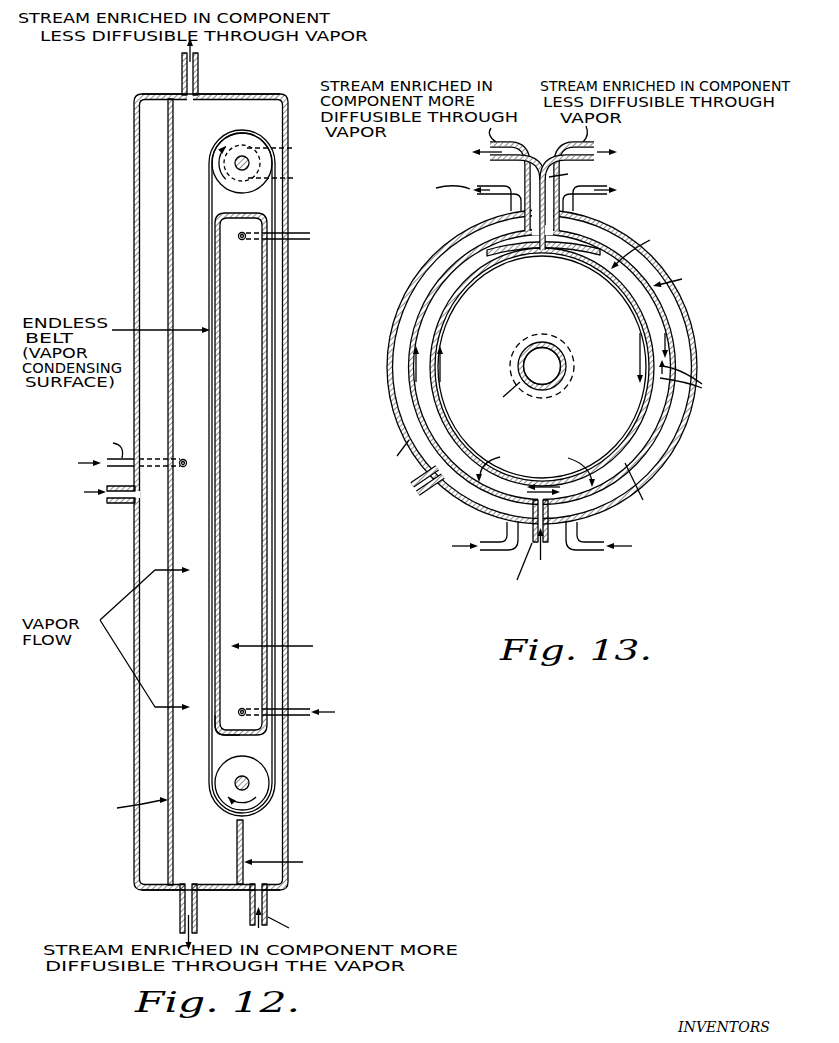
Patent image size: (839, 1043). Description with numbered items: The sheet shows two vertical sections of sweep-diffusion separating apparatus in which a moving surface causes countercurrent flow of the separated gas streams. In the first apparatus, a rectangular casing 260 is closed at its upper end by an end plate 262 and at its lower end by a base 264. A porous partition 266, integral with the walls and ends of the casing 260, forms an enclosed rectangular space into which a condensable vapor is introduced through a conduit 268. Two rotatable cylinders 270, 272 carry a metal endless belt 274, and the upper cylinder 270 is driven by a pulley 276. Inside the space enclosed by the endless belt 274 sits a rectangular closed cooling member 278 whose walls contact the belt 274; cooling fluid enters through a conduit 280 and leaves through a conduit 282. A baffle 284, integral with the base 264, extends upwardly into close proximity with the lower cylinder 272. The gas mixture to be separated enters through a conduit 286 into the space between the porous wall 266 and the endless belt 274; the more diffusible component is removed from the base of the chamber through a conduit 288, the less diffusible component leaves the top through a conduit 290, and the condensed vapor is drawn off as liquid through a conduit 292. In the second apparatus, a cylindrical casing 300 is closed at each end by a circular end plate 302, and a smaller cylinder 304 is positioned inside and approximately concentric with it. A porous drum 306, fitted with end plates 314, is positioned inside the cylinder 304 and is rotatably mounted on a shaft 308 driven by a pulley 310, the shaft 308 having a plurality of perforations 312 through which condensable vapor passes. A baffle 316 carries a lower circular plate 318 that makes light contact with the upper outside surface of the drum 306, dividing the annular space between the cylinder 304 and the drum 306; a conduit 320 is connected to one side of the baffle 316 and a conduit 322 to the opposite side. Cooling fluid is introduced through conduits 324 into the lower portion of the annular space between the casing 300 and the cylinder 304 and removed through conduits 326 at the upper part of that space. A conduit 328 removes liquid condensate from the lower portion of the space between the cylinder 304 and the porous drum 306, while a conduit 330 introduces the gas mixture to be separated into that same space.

In FIG. 12, the rectangular casing 260 is at (135, 203).
In FIG. 12, the end plate 262 is at (246, 88).
In FIG. 12, the base 264 is at (163, 889).
In FIG. 12, the porous partition 266 is at (175, 112).
In FIG. 12, the conduit 268 is at (118, 506).
In FIG. 12, the rotatable cylinder 270 is at (252, 131).
In FIG. 12, the rotatable cylinder 272 is at (258, 775).
In FIG. 12, the metal endless belt 274 is at (213, 737).
In FIG. 12, the pulley 276 is at (262, 160).
In FIG. 12, the rectangular closed cooling member 278 is at (255, 356).
In FIG. 12, the conduit 280 is at (303, 709).
In FIG. 12, the conduit 282 is at (309, 234).
In FIG. 12, the baffle 284 is at (237, 856).
In FIG. 12, the conduit 286 is at (108, 468).
In FIG. 12, the conduit 288 is at (197, 911).
In FIG. 12, the conduit 290 is at (182, 62).
In FIG. 12, the conduit 292 is at (268, 897).
In FIG. 13, the cylindrical casing 300 is at (690, 334).
In FIG. 13, the circular end plate 302 is at (676, 319).
In FIG. 13, the cylinder 304 is at (667, 422).
In FIG. 13, the porous drum 306 is at (573, 257).
In FIG. 13, the shaft 308 is at (566, 347).
In FIG. 13, the pulley 310 is at (566, 374).
In FIG. 13, the perforations 312 is at (517, 364).
In FIG. 13, the end plates 314 is at (465, 300).
In FIG. 13, the baffle 316 is at (572, 222).
In FIG. 13, the lower circular plate 318 is at (543, 259).
In FIG. 13, the conduit 320 is at (597, 146).
In FIG. 13, the conduit 322 is at (503, 198).
In FIG. 13, the conduits 324 is at (486, 551).
In FIG. 13, the conduits 326 is at (492, 198).
In FIG. 13, the conduit 328 is at (547, 548).
In FIG. 13, the conduit 330 is at (409, 484).